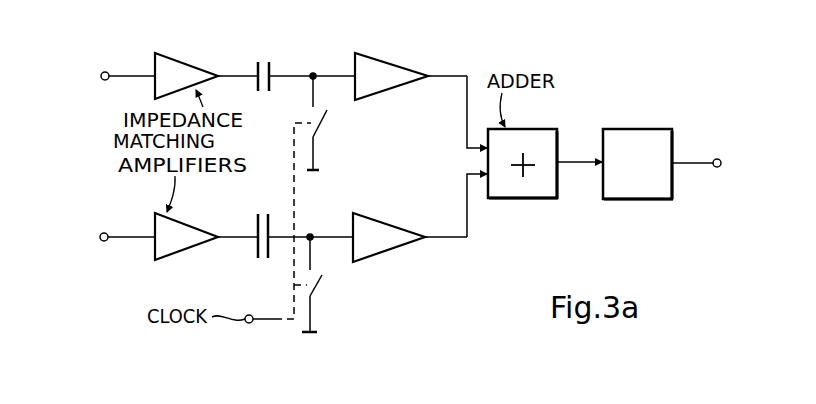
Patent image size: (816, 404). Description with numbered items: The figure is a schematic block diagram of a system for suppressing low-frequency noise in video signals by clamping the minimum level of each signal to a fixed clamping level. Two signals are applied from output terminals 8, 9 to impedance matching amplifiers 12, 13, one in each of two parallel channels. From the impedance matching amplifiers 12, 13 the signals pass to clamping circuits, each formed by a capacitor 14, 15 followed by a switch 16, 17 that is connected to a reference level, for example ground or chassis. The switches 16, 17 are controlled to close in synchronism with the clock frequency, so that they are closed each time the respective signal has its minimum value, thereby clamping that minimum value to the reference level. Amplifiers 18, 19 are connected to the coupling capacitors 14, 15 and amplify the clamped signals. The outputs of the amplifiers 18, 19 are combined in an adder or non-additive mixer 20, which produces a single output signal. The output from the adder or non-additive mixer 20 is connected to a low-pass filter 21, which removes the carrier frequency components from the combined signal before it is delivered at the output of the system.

The output terminal 8 is at (109, 87).
The output terminal 9 is at (108, 223).
The impedance matching amplifier 12 is at (186, 69).
The impedance matching amplifier 13 is at (186, 231).
The capacitor 14 is at (265, 65).
The capacitor 15 is at (264, 224).
The switch 16 is at (325, 123).
The switch 17 is at (320, 284).
The amplifier 18 is at (391, 73).
The amplifier 19 is at (389, 235).
The adder or non-additive mixer 20 is at (523, 150).
The low-pass filter 21 is at (662, 152).